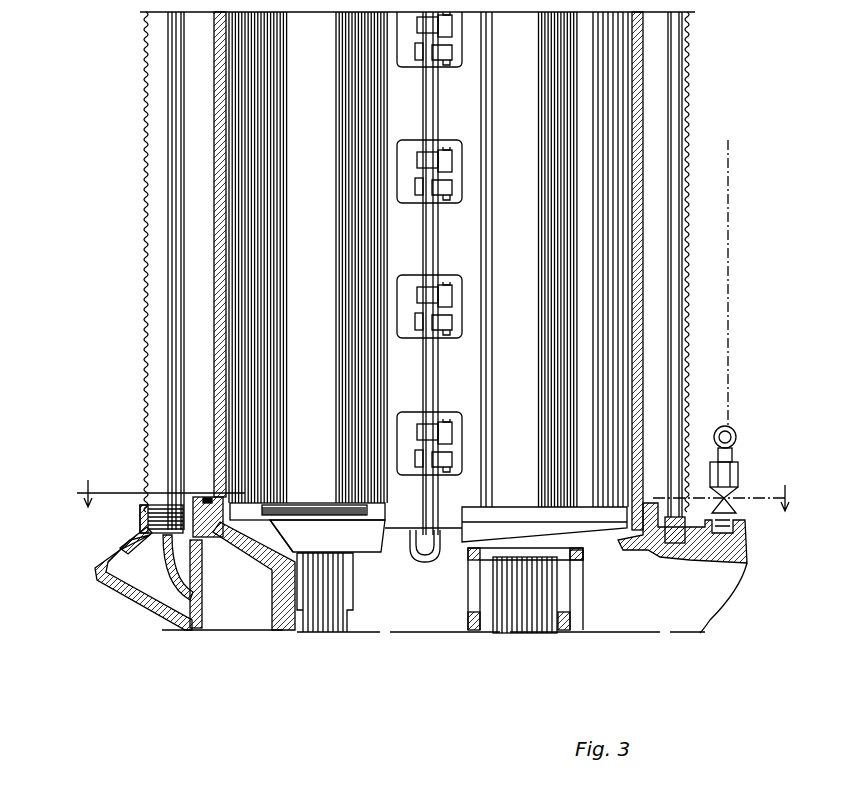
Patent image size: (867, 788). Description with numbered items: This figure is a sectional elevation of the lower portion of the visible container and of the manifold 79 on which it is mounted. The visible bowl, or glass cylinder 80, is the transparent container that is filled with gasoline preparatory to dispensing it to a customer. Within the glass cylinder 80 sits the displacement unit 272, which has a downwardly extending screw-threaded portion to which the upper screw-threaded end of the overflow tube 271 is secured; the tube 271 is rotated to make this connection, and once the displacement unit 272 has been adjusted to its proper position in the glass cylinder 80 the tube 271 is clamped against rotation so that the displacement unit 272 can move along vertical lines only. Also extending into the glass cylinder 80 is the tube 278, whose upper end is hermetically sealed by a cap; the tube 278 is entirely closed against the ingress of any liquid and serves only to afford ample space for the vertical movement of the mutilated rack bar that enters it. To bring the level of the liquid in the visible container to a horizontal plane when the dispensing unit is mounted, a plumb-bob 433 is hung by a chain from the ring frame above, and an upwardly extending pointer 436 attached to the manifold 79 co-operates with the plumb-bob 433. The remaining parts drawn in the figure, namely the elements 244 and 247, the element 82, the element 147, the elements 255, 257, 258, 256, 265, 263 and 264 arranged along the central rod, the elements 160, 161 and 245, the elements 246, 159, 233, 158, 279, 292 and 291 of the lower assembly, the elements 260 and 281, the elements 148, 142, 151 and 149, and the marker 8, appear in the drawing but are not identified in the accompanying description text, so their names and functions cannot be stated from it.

The corrugated outer sheet 244 is at (146, 226).
The corrugated outer sheet 247 is at (690, 105).
The casing wall 82 is at (143, 338).
The glass cylinder 80 is at (640, 357).
The tube 278 is at (308, 257).
The insulating filler 147 is at (554, 259).
The clamp bracket 255 is at (405, 204).
The rod 257 is at (446, 81).
The rod 258 is at (441, 204).
The clamp block 256 is at (425, 156).
The clamp block 265 is at (462, 122).
The nut 263 is at (455, 185).
The stud 264 is at (448, 198).
The threaded nut 160 is at (147, 507).
The packing ring 161 is at (200, 497).
The flange 245 is at (123, 532).
The manifold 79 is at (122, 588).
The bracket arm 246 is at (165, 593).
The seal 159 is at (170, 547).
The support leg 233 is at (188, 628).
The arm 158 is at (203, 545).
The web 279 is at (287, 535).
The displacement unit 272 is at (283, 540).
The plate 292 is at (310, 503).
The gasket 291 is at (327, 516).
The overflow tube 271 is at (317, 628).
The rod end cup 260 is at (414, 548).
The plate 281 is at (470, 507).
The housing 148 is at (470, 585).
The pipe 142 is at (540, 582).
The collar 151 is at (580, 554).
The nut 149 is at (571, 621).
The plumb-bob 433 is at (737, 470).
The pointer 436 is at (733, 515).
The section line 8- 8 is at (433, 497).